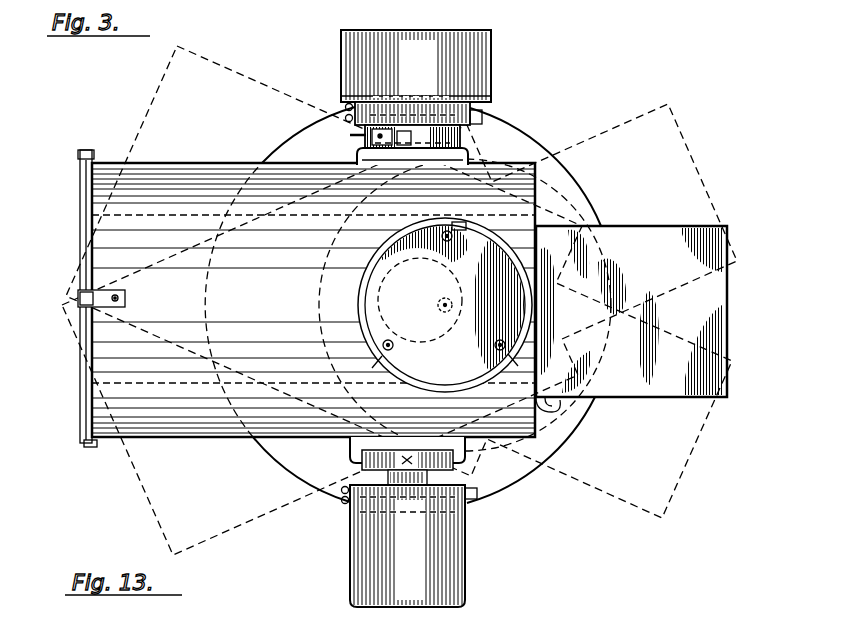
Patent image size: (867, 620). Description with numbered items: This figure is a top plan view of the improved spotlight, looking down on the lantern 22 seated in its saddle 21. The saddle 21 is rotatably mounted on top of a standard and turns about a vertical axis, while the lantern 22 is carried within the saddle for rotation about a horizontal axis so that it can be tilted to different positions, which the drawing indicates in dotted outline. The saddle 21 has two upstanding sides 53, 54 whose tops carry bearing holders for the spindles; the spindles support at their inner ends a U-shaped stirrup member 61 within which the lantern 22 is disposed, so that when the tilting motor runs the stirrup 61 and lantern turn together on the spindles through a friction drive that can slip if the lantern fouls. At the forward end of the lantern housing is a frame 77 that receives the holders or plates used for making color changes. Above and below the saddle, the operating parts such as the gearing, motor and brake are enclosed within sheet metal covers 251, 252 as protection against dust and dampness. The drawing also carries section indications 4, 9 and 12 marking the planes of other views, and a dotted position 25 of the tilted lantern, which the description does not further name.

The lantern 22 is at (214, 166).
The attachment box 25 is at (302, 452).
The sheet metal cover 252 is at (350, 78).
The sheet metal cover 251 is at (351, 567).
The saddle 21 is at (482, 124).
The upstanding side 54 is at (484, 128).
The U-shaped stirrup member 61 is at (470, 452).
The upstanding side 53 is at (478, 494).
The frame 77 is at (83, 451).
The section line 4- 4 is at (33, 280).
The section line 9 is at (416, 17).
The section line 12 is at (422, 328).